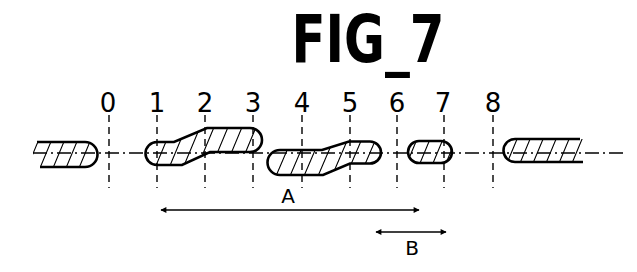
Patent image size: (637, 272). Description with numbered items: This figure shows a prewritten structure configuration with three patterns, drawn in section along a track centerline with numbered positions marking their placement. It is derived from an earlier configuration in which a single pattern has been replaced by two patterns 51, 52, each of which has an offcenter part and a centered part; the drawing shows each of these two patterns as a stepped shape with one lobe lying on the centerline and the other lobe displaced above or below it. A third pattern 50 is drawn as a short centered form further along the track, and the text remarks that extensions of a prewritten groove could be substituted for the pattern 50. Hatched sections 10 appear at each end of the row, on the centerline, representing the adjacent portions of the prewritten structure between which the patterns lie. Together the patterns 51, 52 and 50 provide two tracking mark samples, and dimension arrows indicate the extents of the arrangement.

The elongated guide member 10 is at (77, 142).
The pattern 50 is at (440, 141).
The pattern 51 is at (243, 153).
The pattern 52 is at (313, 150).